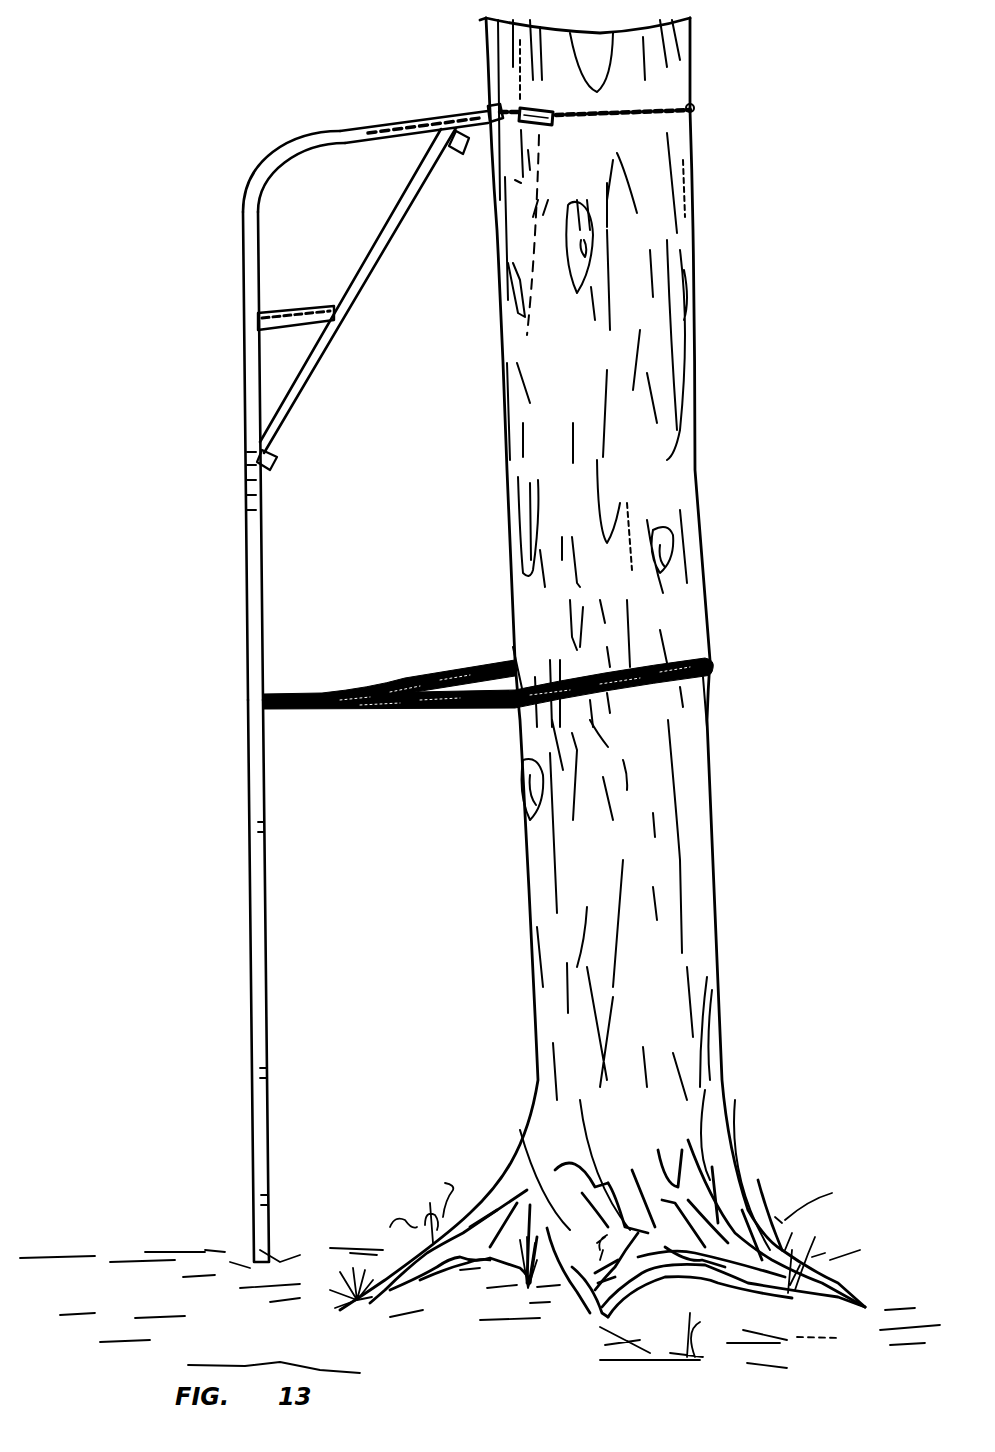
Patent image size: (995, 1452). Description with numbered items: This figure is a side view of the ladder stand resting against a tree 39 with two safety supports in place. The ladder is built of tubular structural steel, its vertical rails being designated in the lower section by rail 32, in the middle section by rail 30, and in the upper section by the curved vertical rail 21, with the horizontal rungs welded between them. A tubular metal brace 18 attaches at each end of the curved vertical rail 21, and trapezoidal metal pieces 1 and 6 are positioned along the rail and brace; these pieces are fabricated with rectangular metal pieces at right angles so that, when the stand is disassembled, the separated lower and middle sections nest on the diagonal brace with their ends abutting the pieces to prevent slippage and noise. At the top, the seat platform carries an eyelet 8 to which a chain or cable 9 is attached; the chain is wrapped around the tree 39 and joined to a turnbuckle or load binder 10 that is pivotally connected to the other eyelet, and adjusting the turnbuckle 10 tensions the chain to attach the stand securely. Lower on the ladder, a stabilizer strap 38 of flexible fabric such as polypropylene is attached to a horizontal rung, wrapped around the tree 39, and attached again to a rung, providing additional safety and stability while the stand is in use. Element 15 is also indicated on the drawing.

The trapezoidal metal piece 1 is at (278, 462).
The trapezoidal metal piece 6 is at (457, 163).
The eyelet 8 is at (488, 103).
The chain or cable 9 is at (694, 106).
The turnbuckle or load binder 10 is at (546, 136).
The step 15 is at (305, 303).
The tubular metal brace 18 is at (316, 365).
The curved vertical rail of upper section 21 is at (243, 207).
The middle section vertical rail 30 is at (245, 648).
The lower section vertical rail 32 is at (252, 1040).
The stabilizer strap 38 is at (347, 707).
The tree 39 is at (697, 308).